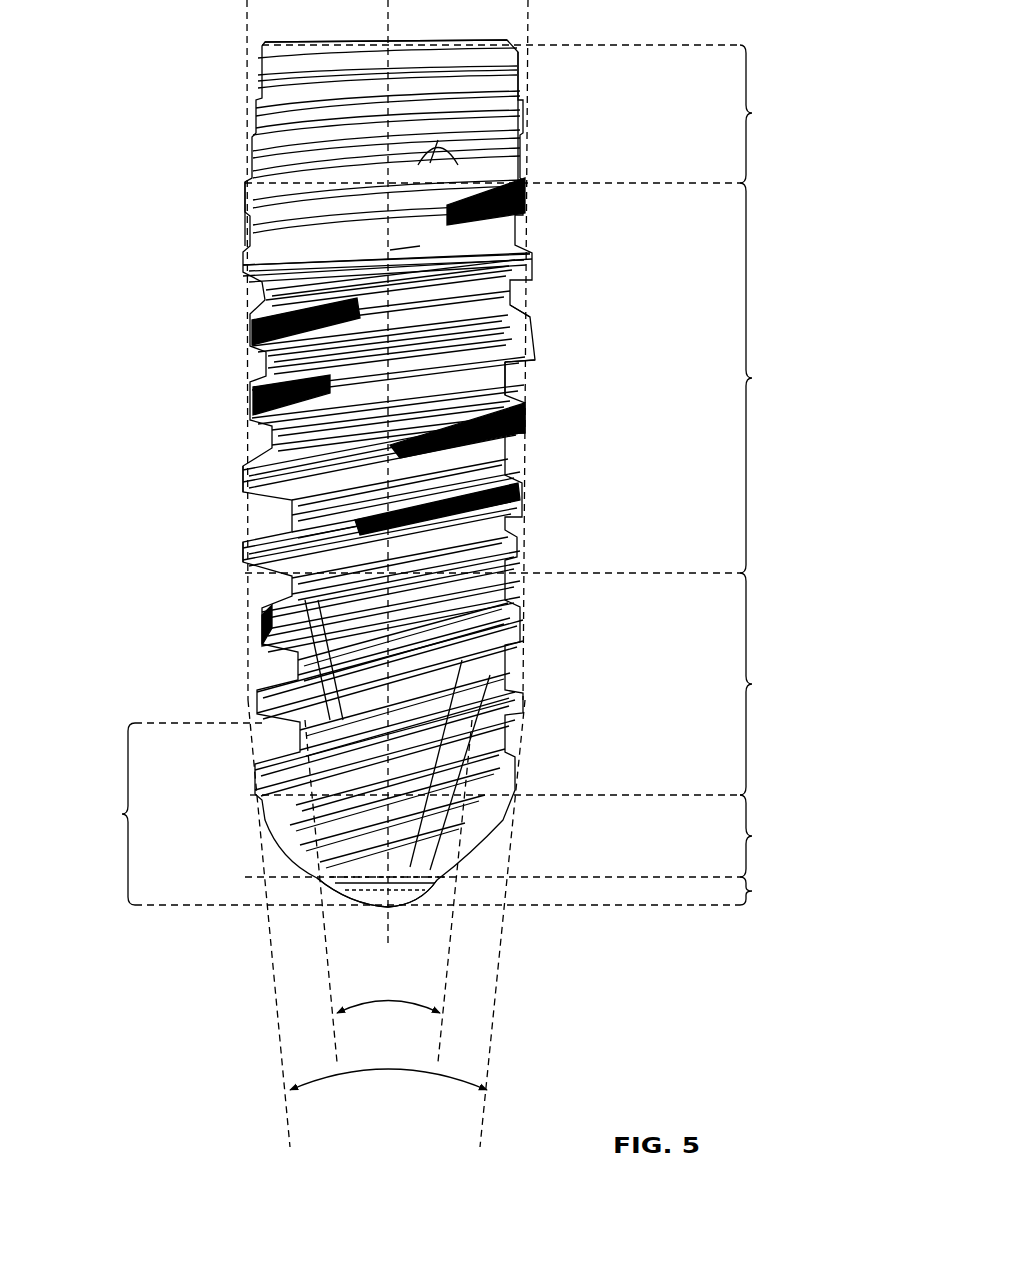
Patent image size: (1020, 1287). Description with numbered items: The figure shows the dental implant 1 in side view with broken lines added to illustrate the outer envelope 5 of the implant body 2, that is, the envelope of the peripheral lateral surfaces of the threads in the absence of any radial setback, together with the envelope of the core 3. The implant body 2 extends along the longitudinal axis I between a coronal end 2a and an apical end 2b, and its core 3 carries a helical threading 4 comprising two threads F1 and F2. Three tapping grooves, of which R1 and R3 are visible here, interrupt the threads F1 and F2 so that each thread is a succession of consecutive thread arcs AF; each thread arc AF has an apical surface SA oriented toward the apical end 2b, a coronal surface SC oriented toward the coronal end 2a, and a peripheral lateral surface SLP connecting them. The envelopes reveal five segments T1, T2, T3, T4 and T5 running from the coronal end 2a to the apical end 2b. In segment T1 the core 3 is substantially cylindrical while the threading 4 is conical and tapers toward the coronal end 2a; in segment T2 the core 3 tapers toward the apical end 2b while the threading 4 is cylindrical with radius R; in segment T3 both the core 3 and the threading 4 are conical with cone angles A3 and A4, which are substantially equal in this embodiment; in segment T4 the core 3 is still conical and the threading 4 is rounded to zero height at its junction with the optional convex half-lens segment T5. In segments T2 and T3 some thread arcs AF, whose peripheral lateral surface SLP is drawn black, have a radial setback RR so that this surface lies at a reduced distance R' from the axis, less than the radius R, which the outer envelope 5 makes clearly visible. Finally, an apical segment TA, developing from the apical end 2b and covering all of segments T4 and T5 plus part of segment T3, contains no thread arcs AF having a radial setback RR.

The dental implant 1 is at (168, 112).
The implant body 2 is at (525, 122).
The coronal end 2a is at (247, 48).
The apical end 2b is at (258, 910).
The core 3 is at (522, 455).
The helical threading 4 is at (588, 277).
The outer envelope 5 is at (240, 226).
The longitudinal axis I is at (387, 478).
The thread arc AF is at (245, 260).
The radial setback RR is at (245, 347).
The radius R is at (502, 305).
The reduced radius R' is at (477, 493).
The tapping groove R1 is at (470, 700).
The tapping groove R3 is at (402, 278).
The coronal surface SC is at (532, 318).
The peripheral lateral surface SLP is at (535, 352).
The apical surface SA is at (536, 362).
The first thread F1 is at (240, 483).
The second thread F2 is at (240, 552).
The first segment T1 is at (767, 114).
The second segment T2 is at (767, 378).
The third segment T3 is at (767, 684).
The fourth segment T4 is at (767, 836).
The fifth segment T5 is at (767, 891).
The apical segment TA is at (105, 814).
The cone angle of the core A3 is at (388, 993).
The cone angle of the threading A4 is at (388, 1063).